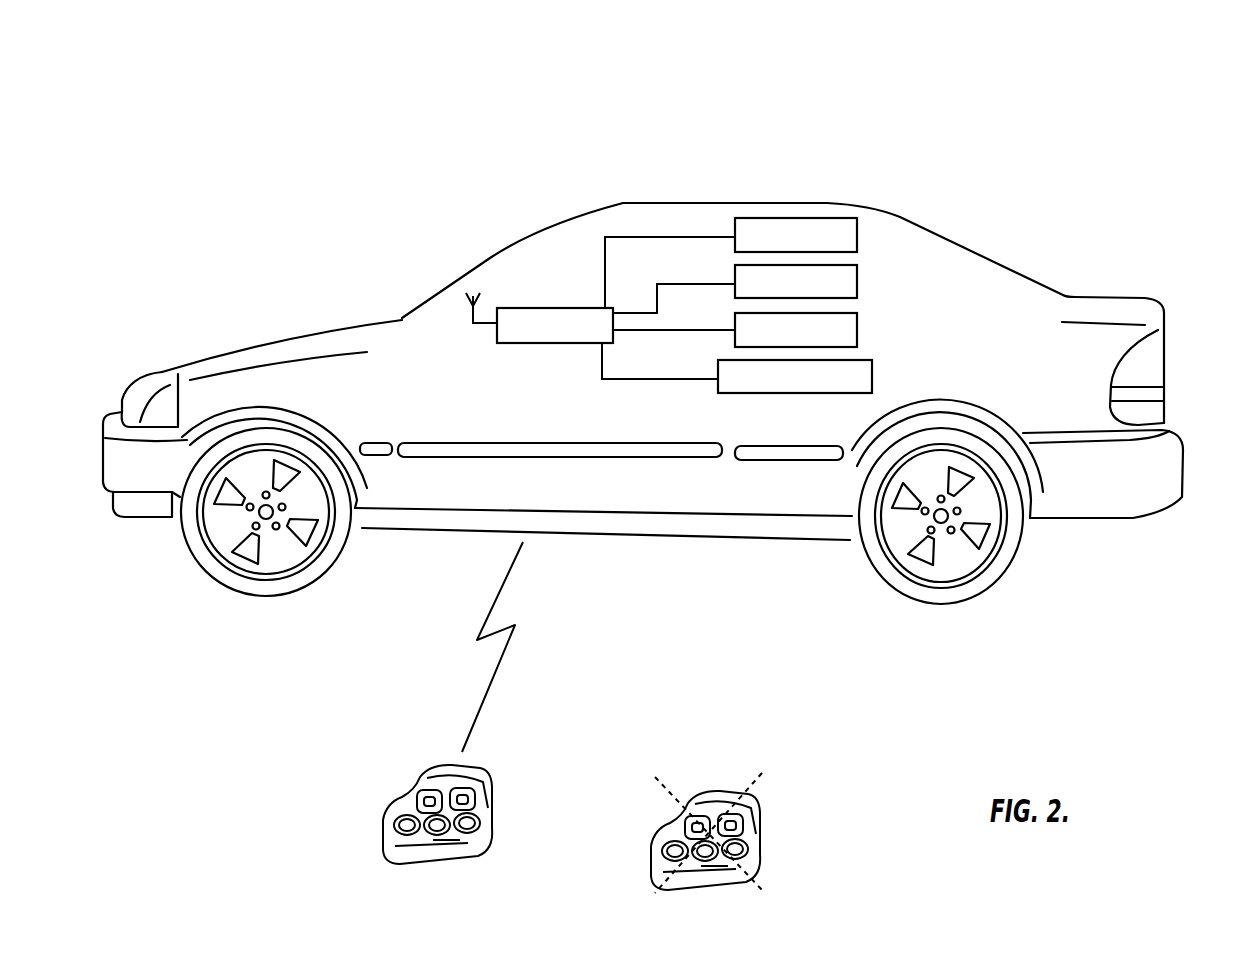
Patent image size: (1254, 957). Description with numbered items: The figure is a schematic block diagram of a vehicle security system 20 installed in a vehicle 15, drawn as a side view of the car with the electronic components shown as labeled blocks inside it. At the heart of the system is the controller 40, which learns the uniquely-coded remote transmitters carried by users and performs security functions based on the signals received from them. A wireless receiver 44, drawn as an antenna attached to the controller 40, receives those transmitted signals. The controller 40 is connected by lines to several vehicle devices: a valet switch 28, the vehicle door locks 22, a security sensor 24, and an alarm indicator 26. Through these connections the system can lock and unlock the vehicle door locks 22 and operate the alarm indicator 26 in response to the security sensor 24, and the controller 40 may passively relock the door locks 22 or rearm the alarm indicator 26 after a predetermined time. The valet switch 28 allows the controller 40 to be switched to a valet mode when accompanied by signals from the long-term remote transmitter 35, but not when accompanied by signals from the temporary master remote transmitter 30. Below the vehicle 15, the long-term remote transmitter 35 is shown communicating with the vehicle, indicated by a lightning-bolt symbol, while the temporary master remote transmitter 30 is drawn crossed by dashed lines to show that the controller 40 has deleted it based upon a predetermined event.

The vehicle security system 20 is at (1150, 105).
The vehicle 15 is at (968, 245).
The controller 40 is at (550, 308).
The wireless receiver 44 is at (473, 323).
The valet switch 28 is at (807, 218).
The vehicle door locks 22 is at (857, 277).
The security sensor 24 is at (857, 332).
The alarm indicator 26 is at (873, 378).
The long-term remote transmitter 35 is at (495, 807).
The temporary master remote transmitter 30 is at (762, 810).